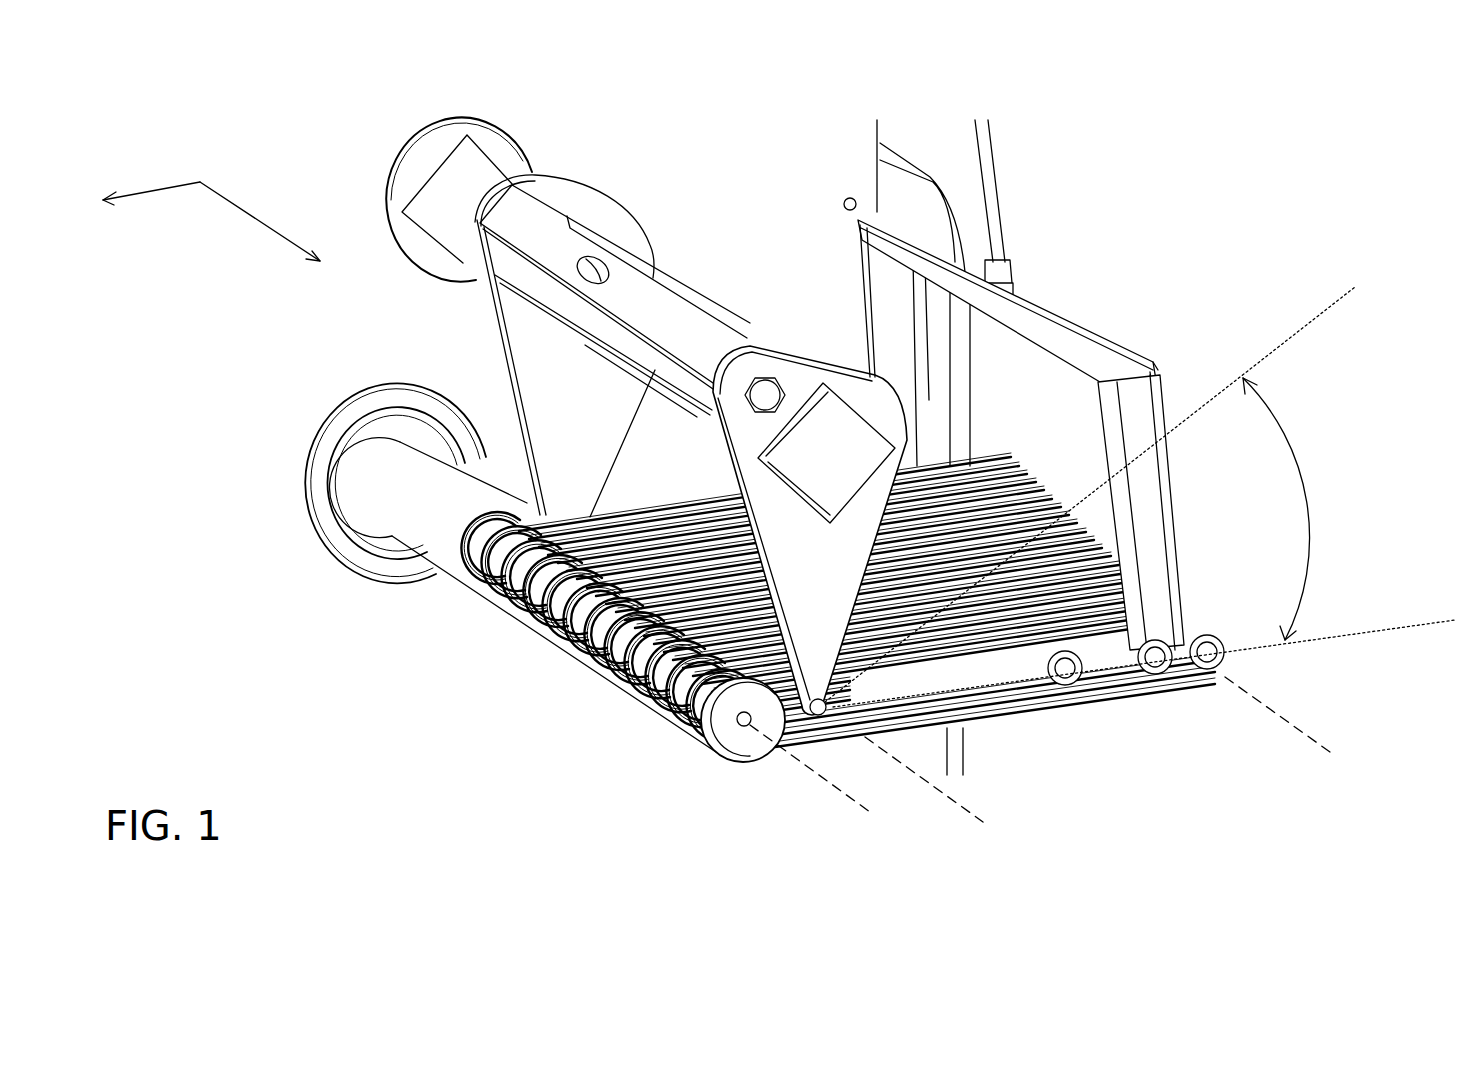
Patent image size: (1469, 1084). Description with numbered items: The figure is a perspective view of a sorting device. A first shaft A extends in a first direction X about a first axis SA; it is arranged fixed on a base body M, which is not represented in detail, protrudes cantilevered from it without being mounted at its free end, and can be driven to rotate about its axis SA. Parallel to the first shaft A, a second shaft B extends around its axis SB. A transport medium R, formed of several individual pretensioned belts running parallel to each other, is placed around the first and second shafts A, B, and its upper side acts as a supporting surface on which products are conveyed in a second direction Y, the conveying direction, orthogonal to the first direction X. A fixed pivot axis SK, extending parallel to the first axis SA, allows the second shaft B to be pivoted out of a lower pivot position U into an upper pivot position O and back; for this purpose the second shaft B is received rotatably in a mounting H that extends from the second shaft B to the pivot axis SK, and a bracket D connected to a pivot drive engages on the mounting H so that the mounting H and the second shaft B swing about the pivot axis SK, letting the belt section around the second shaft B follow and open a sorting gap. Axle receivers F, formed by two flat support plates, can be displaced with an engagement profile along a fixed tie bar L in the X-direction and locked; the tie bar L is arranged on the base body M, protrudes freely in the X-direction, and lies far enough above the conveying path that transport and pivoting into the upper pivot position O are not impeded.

The second direction Y is at (151, 171).
The first direction X is at (260, 231).
The tie bar L is at (540, 290).
The axle receivers F is at (548, 369).
The first shaft A is at (422, 543).
The transport medium R is at (646, 478).
The base body M is at (778, 187).
The bracket D is at (1053, 317).
The second shaft B is at (1182, 597).
The mounting H is at (968, 672).
The upper pivot position O is at (1090, 486).
The lower pivot position U is at (1144, 642).
The first axis SA is at (800, 760).
The pivot axis SK is at (912, 768).
The second axis SB is at (1300, 725).